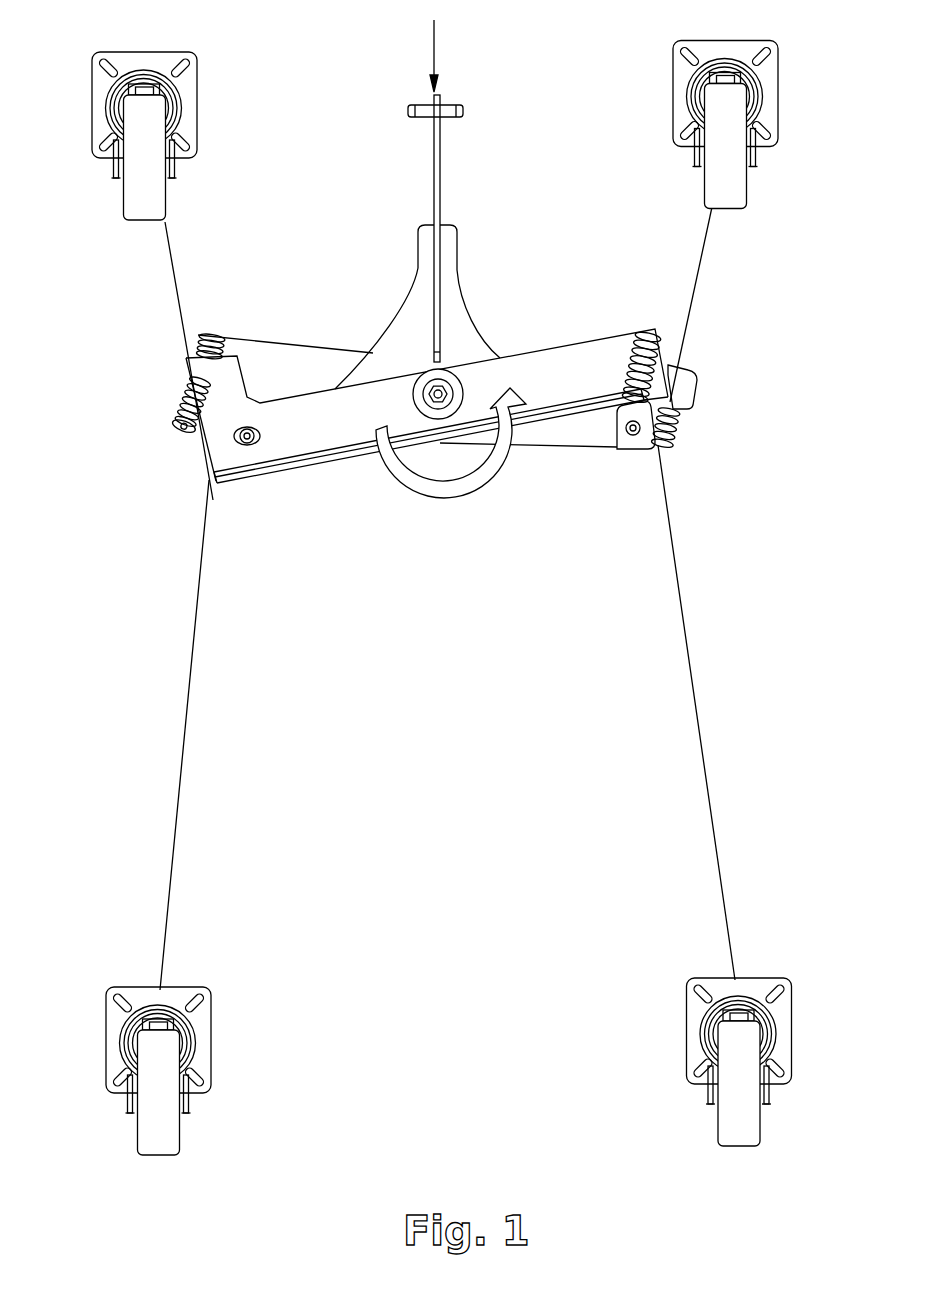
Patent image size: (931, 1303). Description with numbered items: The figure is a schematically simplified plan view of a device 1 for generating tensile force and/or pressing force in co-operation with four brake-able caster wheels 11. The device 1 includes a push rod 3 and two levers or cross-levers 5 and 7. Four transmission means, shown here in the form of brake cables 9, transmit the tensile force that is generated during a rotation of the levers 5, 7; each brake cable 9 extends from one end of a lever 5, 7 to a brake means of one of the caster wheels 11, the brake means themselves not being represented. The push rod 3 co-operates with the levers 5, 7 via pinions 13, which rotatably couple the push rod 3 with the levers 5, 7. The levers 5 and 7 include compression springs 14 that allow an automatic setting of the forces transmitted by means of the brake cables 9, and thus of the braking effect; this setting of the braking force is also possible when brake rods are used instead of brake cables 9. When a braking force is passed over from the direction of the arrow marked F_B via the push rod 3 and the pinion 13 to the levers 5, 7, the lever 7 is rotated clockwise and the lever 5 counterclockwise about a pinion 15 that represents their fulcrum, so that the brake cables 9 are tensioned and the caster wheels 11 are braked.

The device 1 is at (440, 587).
The push rod 3 is at (437, 265).
The lever 5 is at (586, 364).
The lever 7 is at (683, 396).
The brake cable 9 is at (177, 277).
The caster wheel 11 is at (224, 112).
The pinion 13 is at (247, 445).
The compression spring 14 is at (199, 352).
The pinion 15 is at (445, 390).